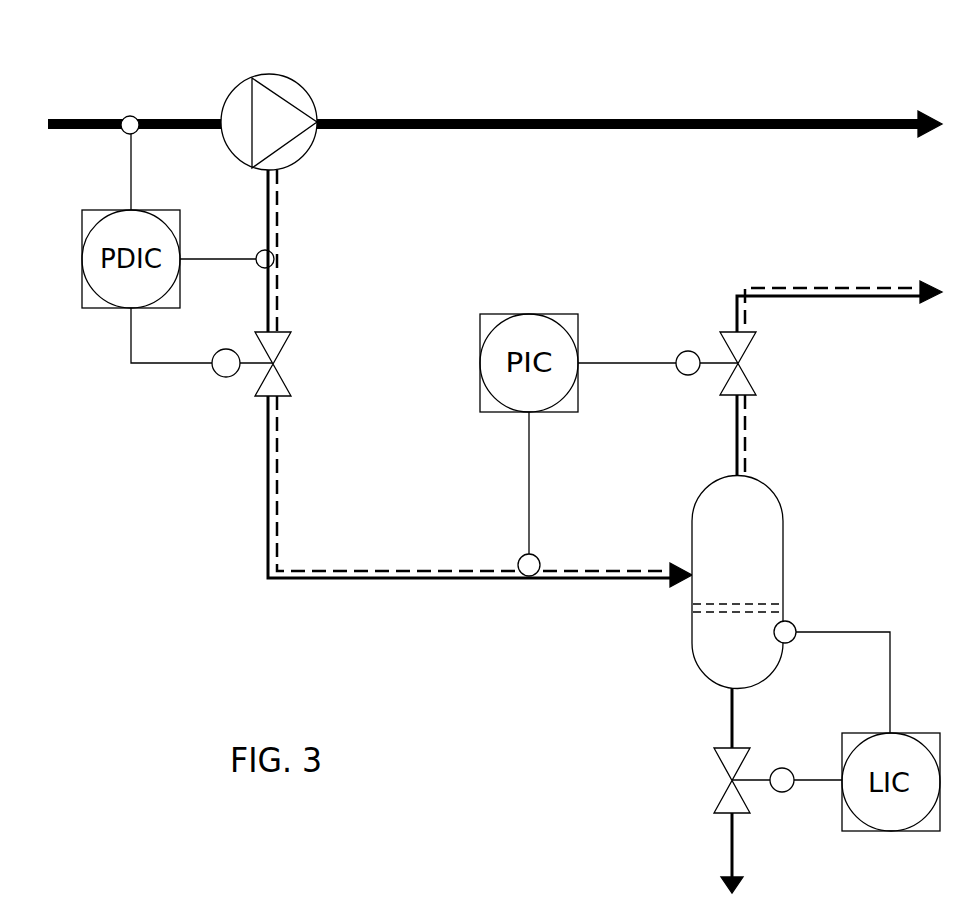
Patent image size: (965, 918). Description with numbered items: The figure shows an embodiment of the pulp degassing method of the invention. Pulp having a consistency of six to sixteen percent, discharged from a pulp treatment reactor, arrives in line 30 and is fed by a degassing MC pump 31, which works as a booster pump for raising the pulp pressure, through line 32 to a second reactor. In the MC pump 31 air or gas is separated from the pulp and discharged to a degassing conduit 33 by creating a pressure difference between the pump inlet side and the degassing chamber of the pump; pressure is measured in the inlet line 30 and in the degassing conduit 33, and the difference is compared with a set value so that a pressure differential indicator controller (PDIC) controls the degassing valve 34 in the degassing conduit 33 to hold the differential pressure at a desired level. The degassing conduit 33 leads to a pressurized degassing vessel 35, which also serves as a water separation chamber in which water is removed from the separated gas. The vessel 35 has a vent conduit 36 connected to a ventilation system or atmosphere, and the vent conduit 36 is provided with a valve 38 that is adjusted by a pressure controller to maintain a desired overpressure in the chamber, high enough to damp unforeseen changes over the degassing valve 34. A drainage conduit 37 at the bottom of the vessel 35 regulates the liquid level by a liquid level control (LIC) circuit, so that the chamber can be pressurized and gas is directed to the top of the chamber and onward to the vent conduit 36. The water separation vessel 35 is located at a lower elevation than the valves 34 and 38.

The line 30 is at (85, 118).
The degassing MC pump 31 is at (302, 85).
The line 32 is at (530, 118).
The degassing conduit 33 is at (278, 288).
The degassing valve 34 is at (280, 377).
The degassing vessel 35 is at (770, 488).
The vent conduit 36 is at (805, 283).
The drainage conduit 37 is at (735, 860).
The valve 38 is at (748, 380).